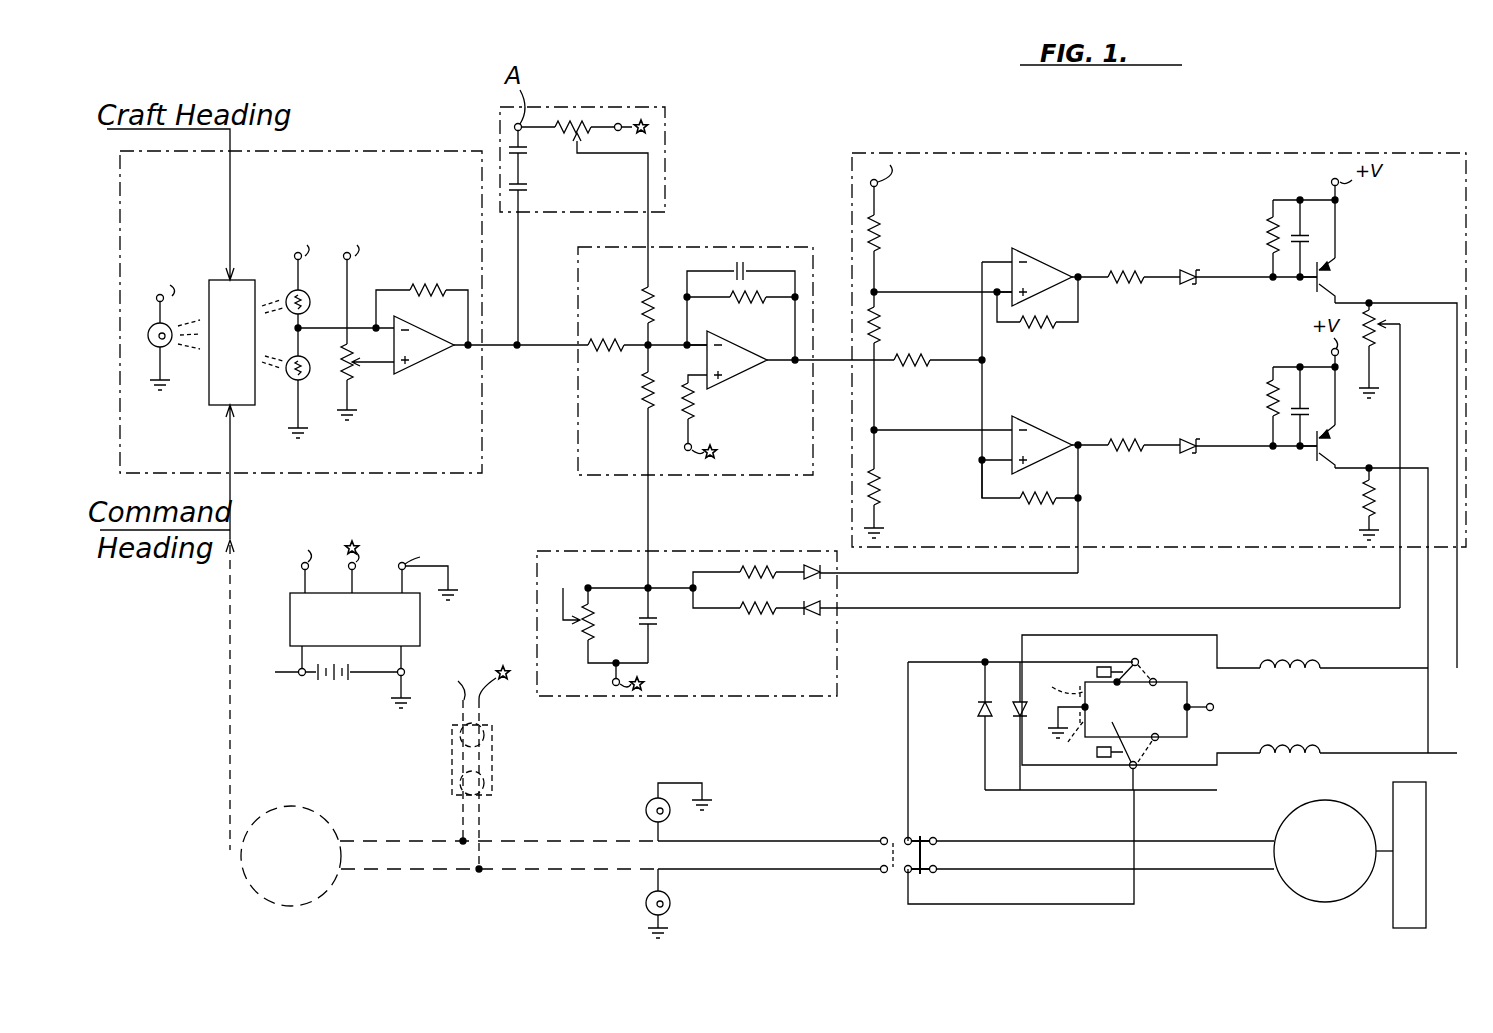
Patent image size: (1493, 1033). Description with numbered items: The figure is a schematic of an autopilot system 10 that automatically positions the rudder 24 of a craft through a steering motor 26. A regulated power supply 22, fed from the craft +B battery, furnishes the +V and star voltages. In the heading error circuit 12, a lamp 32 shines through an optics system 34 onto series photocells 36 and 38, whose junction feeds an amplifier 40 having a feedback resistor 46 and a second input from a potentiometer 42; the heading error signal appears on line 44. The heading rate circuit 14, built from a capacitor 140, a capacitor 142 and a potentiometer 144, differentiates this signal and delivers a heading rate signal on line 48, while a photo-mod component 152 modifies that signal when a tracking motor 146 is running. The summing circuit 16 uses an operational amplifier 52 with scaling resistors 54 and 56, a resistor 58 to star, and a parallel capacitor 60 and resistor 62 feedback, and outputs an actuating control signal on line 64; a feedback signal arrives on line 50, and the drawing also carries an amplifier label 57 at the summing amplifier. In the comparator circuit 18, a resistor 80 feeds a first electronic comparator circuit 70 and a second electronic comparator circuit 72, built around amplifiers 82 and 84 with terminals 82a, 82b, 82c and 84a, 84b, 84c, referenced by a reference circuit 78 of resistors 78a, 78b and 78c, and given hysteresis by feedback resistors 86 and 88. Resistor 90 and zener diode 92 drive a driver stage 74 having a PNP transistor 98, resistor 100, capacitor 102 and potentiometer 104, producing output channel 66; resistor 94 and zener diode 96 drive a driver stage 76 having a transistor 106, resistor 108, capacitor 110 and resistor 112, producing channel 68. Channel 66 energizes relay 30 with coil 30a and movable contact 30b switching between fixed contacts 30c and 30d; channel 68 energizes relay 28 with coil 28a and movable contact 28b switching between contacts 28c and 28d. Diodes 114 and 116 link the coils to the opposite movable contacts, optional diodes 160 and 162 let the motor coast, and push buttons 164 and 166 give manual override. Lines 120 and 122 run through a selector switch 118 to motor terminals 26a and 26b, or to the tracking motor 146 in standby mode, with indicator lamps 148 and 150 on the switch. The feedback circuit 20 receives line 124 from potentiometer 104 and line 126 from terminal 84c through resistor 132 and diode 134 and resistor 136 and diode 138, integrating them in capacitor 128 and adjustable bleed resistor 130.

The autopilot system 10 is at (971, 90).
The heading error circuit 12 is at (443, 93).
The heading rate circuit 14 is at (705, 70).
The summing circuit 16 is at (745, 247).
The comparator circuit 18 is at (1280, 115).
The feedback circuit 20 is at (812, 696).
The regulated power supply 22 is at (422, 624).
The rudder 24 is at (1426, 806).
The steering motor 26 is at (1299, 834).
The steering motor terminal 26a is at (1276, 839).
The steering motor terminal 26b is at (1272, 873).
The steering relay 28 is at (1225, 671).
The relay coil 28a is at (1322, 672).
The movable contact 28b is at (1122, 680).
The fixed contact 28c is at (1136, 658).
The fixed contact 28d is at (1156, 679).
The steering relay 30 is at (1242, 744).
The relay coil 30a is at (1285, 758).
The movable contact 30b is at (1138, 767).
The fixed contact 30c is at (1086, 719).
The fixed contact 30d is at (1165, 725).
The lamp 32 is at (173, 300).
The optics system 34 is at (245, 282).
The photocell 36 is at (305, 290).
The photocell 38 is at (290, 378).
The amplifier 40 is at (430, 362).
The potentiometer 42 is at (357, 375).
The line 44 is at (517, 352).
The feedback resistor 46 is at (428, 285).
The line 48 is at (652, 218).
The line 50 is at (655, 498).
The operational amplifier 52 is at (600, 352).
The scaling resistor 54 is at (652, 285).
The scaling resistor 56 is at (640, 402).
The operational amplifier 57 is at (745, 382).
The resistor 58 is at (700, 400).
The capacitor 60 is at (742, 268).
The resistor 62 is at (765, 292).
The line 64 is at (818, 370).
The output channel 66 is at (1457, 677).
The output channel 68 is at (1428, 562).
The first electronic comparator circuit 70 is at (1097, 262).
The second electronic comparator circuit 72 is at (1103, 438).
The driver stage 74 is at (1383, 248).
The driver stage 76 is at (1258, 380).
The reference circuit 78 is at (917, 347).
The resistor 78a is at (880, 222).
The resistor 78b is at (880, 325).
The resistor 78c is at (880, 490).
The resistor 80 is at (915, 355).
The amplifier 82 is at (1030, 274).
The positive input terminal 82a is at (955, 297).
The negative input terminal 82b is at (1005, 262).
The output terminal 82c is at (1080, 280).
The amplifier 84 is at (1040, 440).
The positive input terminal 84a is at (1000, 462).
The negative input terminal 84b is at (1010, 430).
The output terminal 84c is at (1085, 450).
The feedback resistor 86 is at (1040, 328).
The feedback resistor 88 is at (1030, 505).
The resistor 90 is at (1128, 272).
The zener diode 92 is at (1186, 268).
The resistor 94 is at (1110, 450).
The zener diode 96 is at (1186, 437).
The PNP transistor 98 is at (1315, 288).
The resistor 100 is at (1265, 235).
The capacitor 102 is at (1305, 232).
The resistor 104 is at (1360, 310).
The PNP transistor 106 is at (1318, 470).
The resistor 108 is at (1268, 398).
The capacitor 110 is at (1290, 400).
The resistor 112 is at (1360, 498).
The diode 114 is at (1012, 710).
The diode 116 is at (976, 706).
The selector switch 118 is at (877, 826).
The line 120 is at (905, 735).
The line 122 is at (1062, 906).
The line 124 is at (955, 610).
The line 126 is at (988, 573).
The capacitor 128 is at (653, 640).
The adjustable bleed resistor 130 is at (583, 645).
The resistor 132 is at (750, 566).
The diode 134 is at (812, 565).
The resistor 136 is at (755, 615).
The diode 138 is at (812, 615).
The capacitor 140 is at (527, 190).
The capacitor 142 is at (527, 160).
The potentiometer 144 is at (567, 120).
The tracking motor 146 is at (296, 800).
The indicator lamp 148 is at (646, 811).
The indicator lamp 150 is at (646, 904).
The photo-mod component 152 is at (492, 747).
The diode 160 is at (1055, 683).
The diode 162 is at (1056, 736).
The manual push button 164 is at (1105, 666).
The manual push button 166 is at (1102, 760).